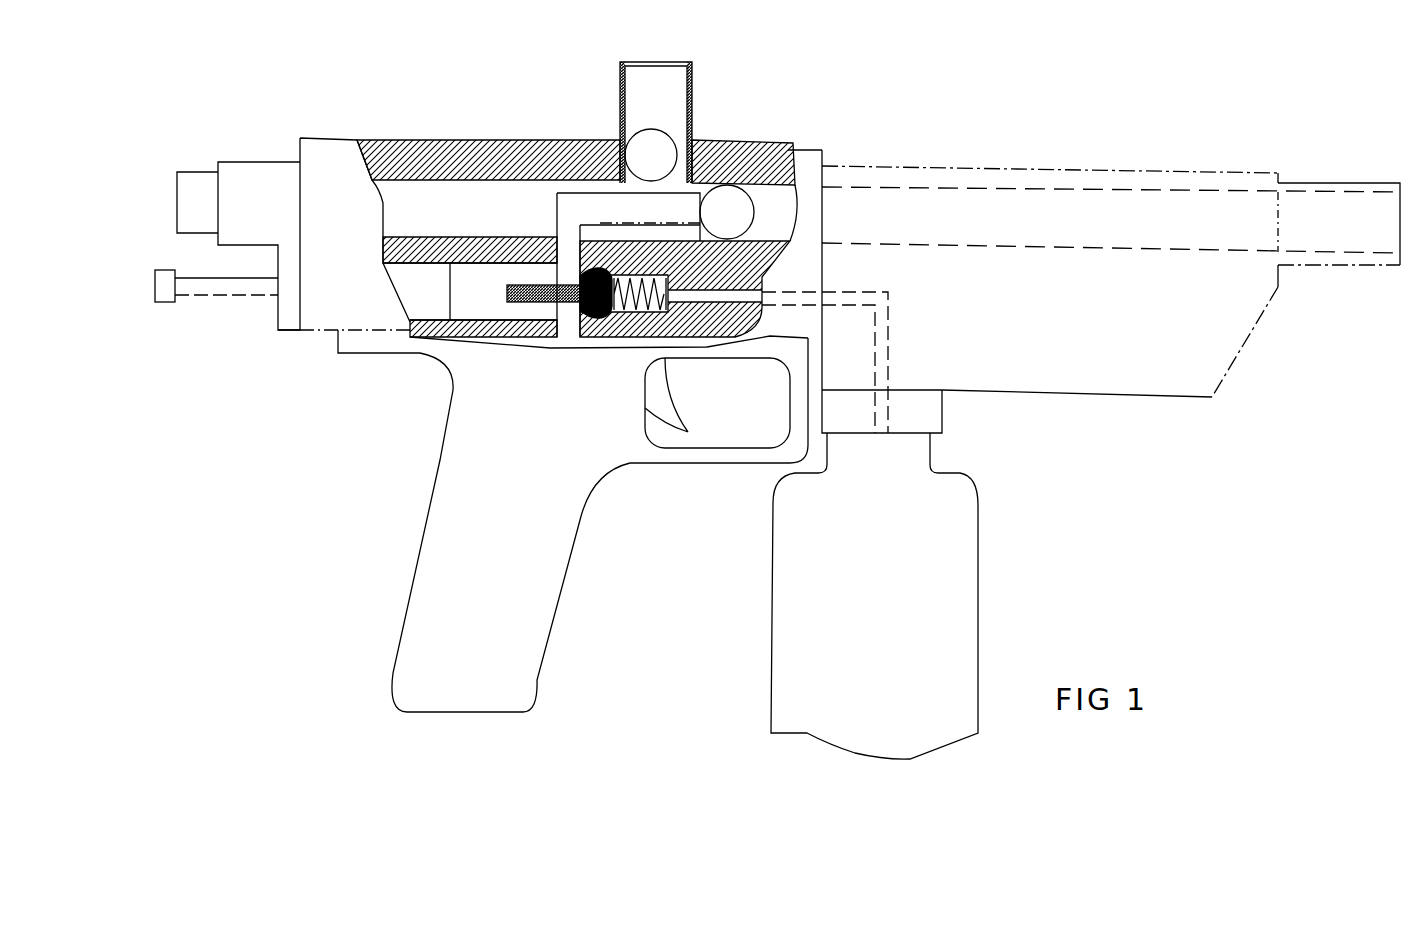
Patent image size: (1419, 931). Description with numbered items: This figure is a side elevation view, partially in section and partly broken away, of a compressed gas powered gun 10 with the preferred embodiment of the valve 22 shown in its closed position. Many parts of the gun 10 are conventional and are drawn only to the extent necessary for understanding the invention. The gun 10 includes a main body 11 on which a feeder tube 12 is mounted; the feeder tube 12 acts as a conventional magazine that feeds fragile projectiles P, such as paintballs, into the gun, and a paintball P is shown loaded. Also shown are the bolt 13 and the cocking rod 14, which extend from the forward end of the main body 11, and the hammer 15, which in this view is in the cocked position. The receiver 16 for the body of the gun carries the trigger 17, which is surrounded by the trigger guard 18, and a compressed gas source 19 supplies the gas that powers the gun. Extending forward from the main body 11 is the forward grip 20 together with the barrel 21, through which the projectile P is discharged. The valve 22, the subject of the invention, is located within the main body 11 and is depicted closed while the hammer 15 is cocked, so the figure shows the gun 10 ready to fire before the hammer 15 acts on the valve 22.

The gun 10 is at (722, 147).
The main body 11 is at (465, 142).
The feeder tube 12 is at (655, 62).
The bolt 13 is at (196, 172).
The cocking rod 14 is at (160, 272).
The hammer 15 is at (422, 287).
The receiver 16 is at (527, 707).
The trigger 17 is at (688, 432).
The trigger guard 18 is at (783, 465).
The compressed gas source 19 is at (980, 637).
The forward grip 20 is at (1130, 398).
The barrel 21 is at (1338, 183).
The valve 22 is at (533, 305).
The fragile projectiles P is at (648, 153).